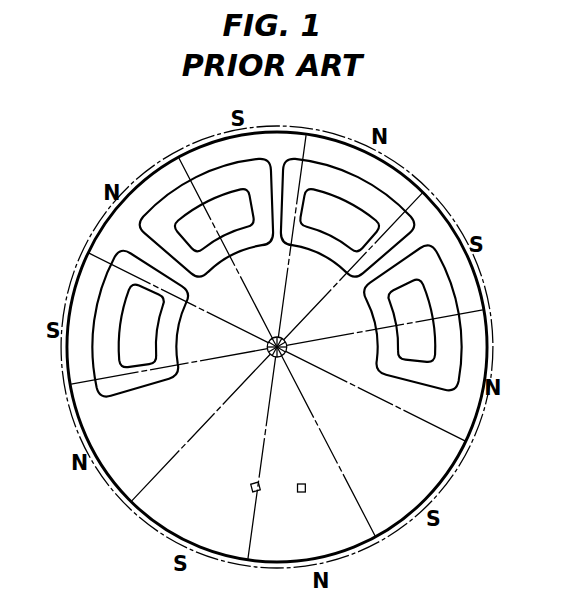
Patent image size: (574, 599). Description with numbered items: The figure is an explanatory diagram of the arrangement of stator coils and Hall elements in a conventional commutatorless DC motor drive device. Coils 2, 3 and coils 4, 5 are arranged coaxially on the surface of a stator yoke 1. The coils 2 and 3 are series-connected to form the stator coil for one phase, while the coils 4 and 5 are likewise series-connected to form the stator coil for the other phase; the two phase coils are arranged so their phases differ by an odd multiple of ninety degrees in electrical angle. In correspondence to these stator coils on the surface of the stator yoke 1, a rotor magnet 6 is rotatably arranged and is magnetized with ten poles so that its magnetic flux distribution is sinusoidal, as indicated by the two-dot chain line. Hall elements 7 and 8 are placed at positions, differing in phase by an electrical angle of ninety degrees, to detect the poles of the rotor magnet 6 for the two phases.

The stator yoke 1 is at (417, 472).
The coil 2 is at (108, 302).
The coil 3 is at (367, 195).
The coil 4 is at (187, 198).
The coil 5 is at (440, 305).
The rotor magnet 6 is at (387, 537).
The Hall element 7 is at (265, 487).
The Hall element 8 is at (307, 487).